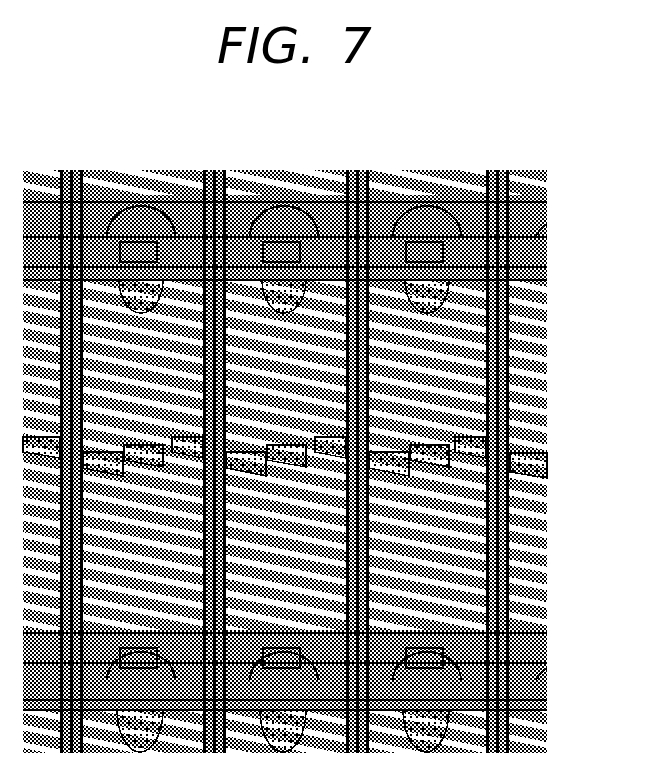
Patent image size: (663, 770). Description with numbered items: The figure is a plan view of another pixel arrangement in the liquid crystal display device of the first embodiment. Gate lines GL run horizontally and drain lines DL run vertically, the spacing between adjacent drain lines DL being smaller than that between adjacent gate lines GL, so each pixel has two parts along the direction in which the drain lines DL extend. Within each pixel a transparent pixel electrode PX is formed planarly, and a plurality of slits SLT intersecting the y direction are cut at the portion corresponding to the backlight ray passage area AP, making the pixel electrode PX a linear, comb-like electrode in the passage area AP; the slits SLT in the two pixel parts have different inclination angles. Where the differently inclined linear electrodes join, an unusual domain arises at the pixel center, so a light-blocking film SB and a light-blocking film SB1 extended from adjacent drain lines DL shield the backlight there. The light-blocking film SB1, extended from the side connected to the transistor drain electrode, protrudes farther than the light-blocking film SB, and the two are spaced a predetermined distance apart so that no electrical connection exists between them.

The drain line DL is at (78, 170).
The gate line GL is at (548, 222).
The pixel electrode PX is at (545, 436).
The slit SLT is at (540, 407).
The light-blocking film SB is at (475, 443).
The light-blocking film SB1 is at (415, 462).
The backlight ray passage area AP is at (492, 553).